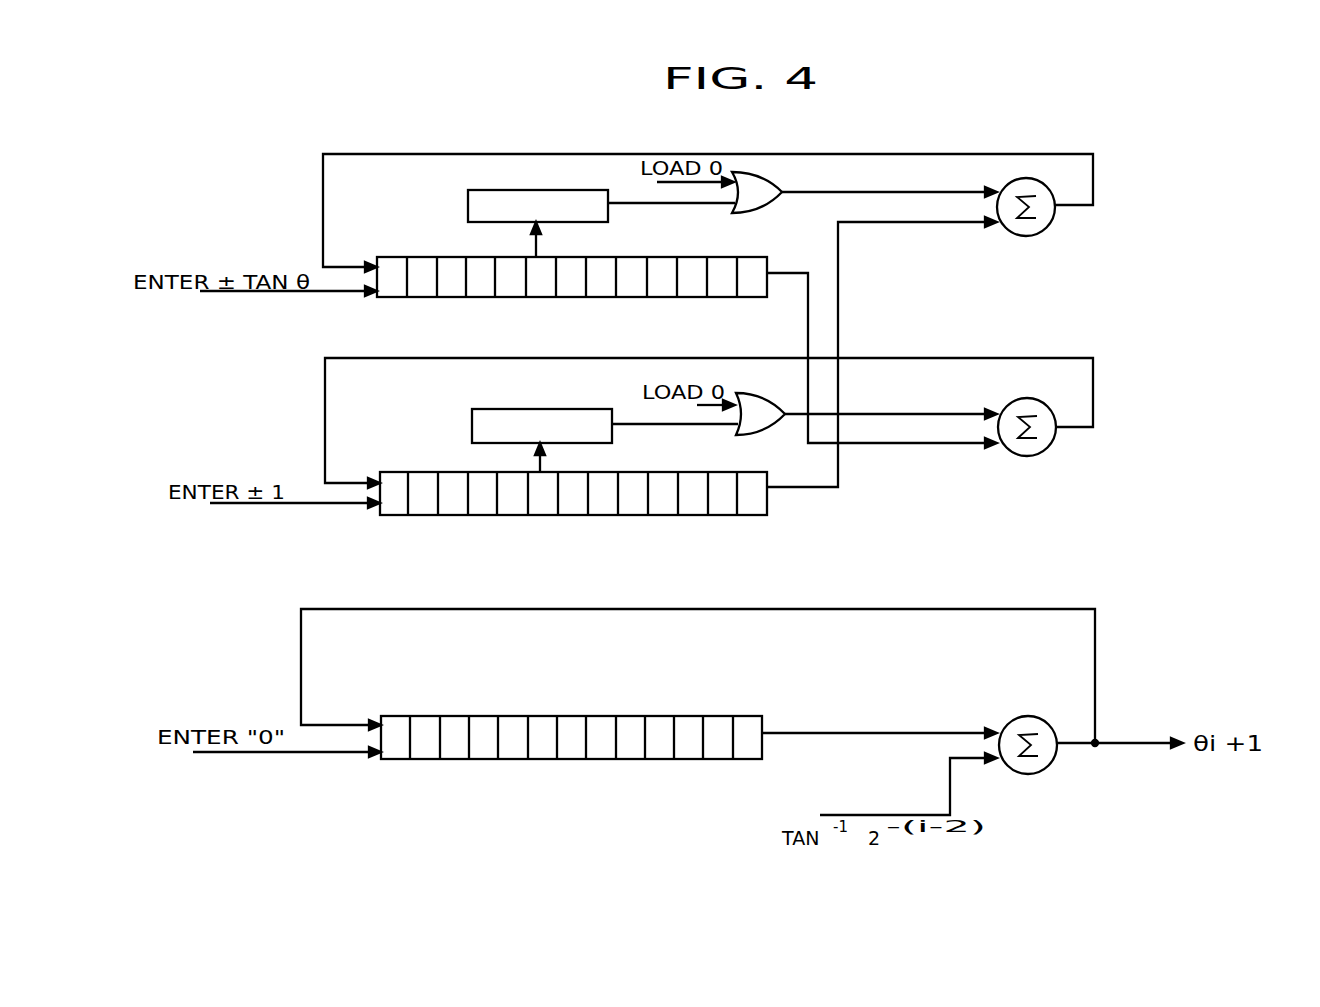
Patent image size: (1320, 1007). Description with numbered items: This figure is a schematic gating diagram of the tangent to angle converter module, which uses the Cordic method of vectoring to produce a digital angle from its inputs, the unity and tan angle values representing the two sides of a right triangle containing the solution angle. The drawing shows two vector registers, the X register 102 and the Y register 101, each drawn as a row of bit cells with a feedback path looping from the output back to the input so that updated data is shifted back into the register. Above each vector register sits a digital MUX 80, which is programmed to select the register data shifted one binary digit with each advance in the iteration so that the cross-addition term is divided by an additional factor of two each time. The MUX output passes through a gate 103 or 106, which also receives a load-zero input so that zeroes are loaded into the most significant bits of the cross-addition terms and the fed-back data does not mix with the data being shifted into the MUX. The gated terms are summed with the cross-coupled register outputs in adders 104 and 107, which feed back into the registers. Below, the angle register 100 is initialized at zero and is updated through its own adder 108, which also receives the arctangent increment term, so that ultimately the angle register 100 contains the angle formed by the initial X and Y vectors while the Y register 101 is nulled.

The digital MUX 80 is at (599, 179).
The angle register 100 is at (751, 719).
The Y register 101 is at (745, 517).
The X register 102 is at (742, 258).
The OR gate 103 is at (780, 183).
The adder 104 is at (1062, 177).
The OR gate 106 is at (755, 437).
The adder 107 is at (1045, 385).
The adder 108 is at (1040, 690).